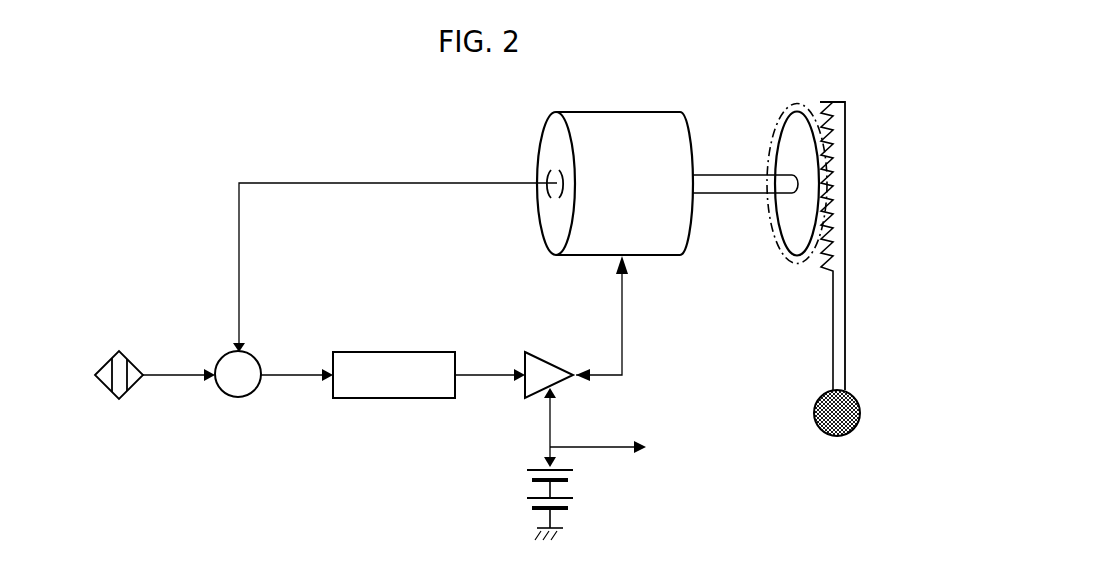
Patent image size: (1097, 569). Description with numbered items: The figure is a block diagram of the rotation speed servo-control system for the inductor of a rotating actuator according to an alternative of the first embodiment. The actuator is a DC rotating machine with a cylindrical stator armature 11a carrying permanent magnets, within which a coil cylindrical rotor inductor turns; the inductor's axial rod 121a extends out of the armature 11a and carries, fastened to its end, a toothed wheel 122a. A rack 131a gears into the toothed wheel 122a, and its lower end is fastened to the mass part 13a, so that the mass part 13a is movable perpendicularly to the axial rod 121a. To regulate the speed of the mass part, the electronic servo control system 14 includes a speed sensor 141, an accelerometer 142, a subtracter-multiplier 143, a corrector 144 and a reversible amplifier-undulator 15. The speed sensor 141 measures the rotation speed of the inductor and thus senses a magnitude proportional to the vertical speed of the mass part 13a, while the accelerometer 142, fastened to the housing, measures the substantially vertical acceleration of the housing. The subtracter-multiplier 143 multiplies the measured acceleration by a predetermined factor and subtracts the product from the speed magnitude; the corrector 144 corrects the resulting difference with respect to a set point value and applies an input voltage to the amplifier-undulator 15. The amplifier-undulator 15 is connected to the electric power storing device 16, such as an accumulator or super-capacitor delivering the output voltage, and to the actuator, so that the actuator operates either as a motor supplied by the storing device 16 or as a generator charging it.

The electronic servo control system 14 is at (182, 128).
The cylindrical stator armature 11a is at (624, 111).
The speed sensor 141 is at (541, 215).
The axial rod 121a is at (745, 193).
The toothed wheel 122a is at (797, 130).
The rack 131a is at (832, 332).
The mass part 13a is at (815, 420).
The accelerometer 142 is at (110, 362).
The subtracter-multiplier 143 is at (248, 394).
The corrector 144 is at (392, 352).
The reversible amplifier-undulator 15 is at (540, 356).
The electric power storing device 16 is at (575, 490).